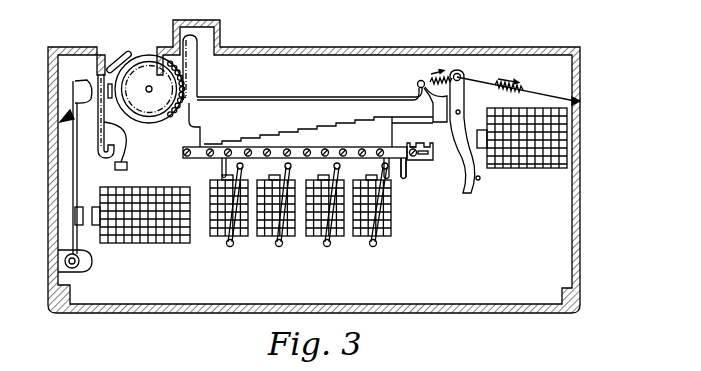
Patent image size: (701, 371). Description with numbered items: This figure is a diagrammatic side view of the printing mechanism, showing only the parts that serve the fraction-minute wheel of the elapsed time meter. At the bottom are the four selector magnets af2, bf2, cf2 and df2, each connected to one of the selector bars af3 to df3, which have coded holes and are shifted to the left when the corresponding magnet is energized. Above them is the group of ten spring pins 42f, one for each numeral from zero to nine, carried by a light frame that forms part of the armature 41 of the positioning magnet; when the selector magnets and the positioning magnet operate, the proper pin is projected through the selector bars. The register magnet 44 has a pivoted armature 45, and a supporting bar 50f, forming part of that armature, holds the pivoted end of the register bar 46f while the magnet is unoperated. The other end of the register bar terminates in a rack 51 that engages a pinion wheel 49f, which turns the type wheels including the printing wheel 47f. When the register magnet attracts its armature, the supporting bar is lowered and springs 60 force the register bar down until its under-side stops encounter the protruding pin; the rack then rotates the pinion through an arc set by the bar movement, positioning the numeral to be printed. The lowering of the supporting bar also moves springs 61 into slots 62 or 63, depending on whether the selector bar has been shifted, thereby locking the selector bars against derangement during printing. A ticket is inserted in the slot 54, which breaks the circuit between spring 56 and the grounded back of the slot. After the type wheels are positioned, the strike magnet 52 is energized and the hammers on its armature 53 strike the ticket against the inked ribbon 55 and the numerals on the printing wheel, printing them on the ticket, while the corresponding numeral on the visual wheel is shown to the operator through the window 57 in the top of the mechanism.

The armature of positioning magnet 41 is at (401, 173).
The spring pins 42f is at (221, 173).
The register magnet 44 is at (506, 170).
The pivoted armature 45 is at (464, 118).
The register bar 46f is at (279, 100).
The printing wheel 47f is at (143, 124).
The pinion wheel 49f is at (144, 146).
The supporting bar 50f is at (436, 122).
The rack 51 is at (197, 73).
The strike magnet 52 is at (130, 245).
The armature of strike magnet 53 is at (79, 240).
The slot 54 is at (112, 61).
The inked ribbon 55 is at (108, 87).
The spring 56 is at (109, 157).
The window 57 is at (146, 54).
The springs 60 is at (431, 73).
The springs 61 is at (412, 147).
The slot 62 is at (421, 148).
The slot 63 is at (432, 153).
The selector magnet af2 is at (217, 238).
The selector magnet bf2 is at (264, 238).
The selector magnet cf2 is at (310, 238).
The selector magnet df2 is at (356, 238).
The selector bar af3 is at (405, 173).